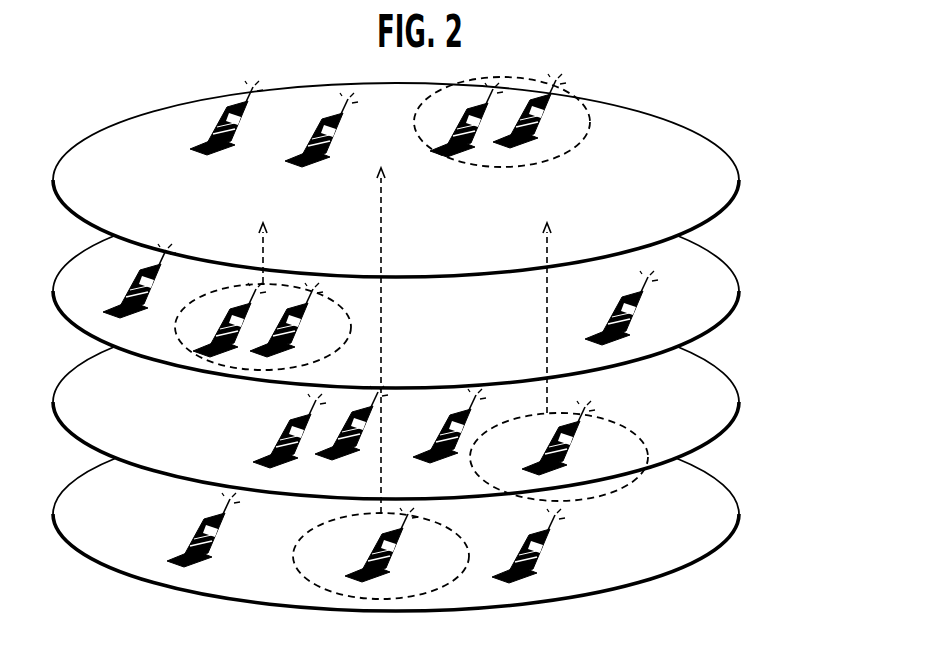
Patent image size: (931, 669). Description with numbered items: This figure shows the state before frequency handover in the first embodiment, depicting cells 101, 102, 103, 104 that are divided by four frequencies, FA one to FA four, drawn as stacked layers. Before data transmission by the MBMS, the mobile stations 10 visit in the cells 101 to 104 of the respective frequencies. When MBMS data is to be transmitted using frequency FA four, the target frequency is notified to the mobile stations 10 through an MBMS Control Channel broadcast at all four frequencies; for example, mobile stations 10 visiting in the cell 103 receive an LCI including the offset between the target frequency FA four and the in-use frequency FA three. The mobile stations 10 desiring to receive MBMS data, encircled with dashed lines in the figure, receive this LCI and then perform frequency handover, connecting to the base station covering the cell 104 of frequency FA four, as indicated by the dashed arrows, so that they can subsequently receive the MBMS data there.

The mobile station 10 is at (206, 152).
The cell 101 is at (714, 478).
The cell 102 is at (714, 366).
The cell 103 is at (714, 255).
The cell 104 is at (714, 144).